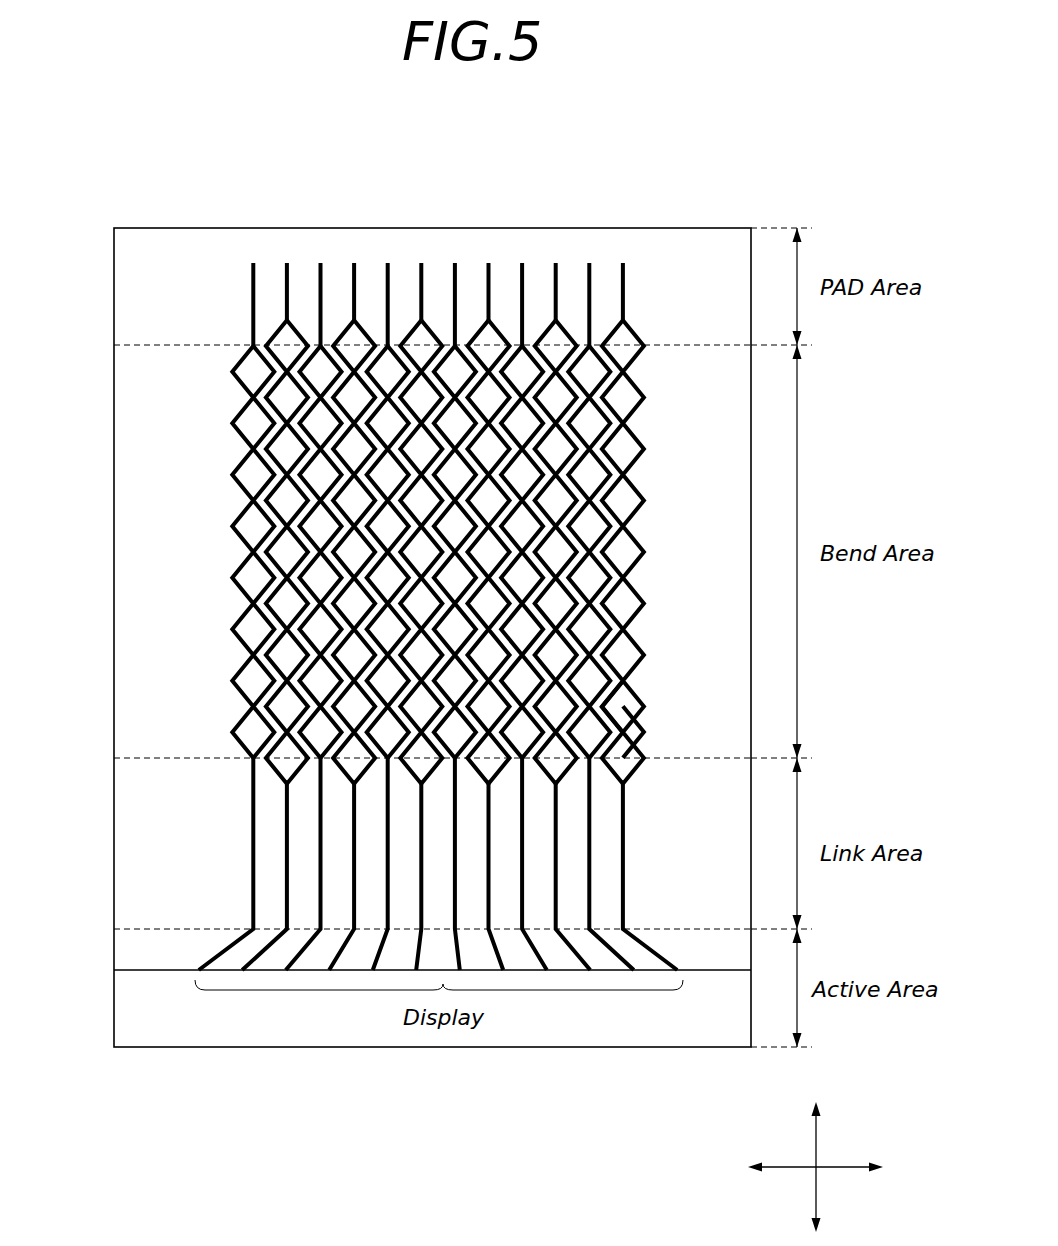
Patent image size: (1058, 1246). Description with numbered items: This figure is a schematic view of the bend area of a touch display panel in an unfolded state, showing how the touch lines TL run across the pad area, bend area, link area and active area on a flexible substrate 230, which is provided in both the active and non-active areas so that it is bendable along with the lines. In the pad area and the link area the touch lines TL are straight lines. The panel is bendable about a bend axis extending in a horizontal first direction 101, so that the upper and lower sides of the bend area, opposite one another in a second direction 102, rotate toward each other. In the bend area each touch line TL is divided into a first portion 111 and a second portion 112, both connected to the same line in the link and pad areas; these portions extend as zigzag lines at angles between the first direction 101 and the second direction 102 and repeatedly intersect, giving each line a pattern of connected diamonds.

The flexible substrate 230 is at (136, 278).
The touch lines TL is at (535, 579).
The second portion 112 is at (613, 710).
The first portion 111 is at (637, 723).
The second direction 102 is at (816, 1130).
The first direction 101 is at (851, 1170).